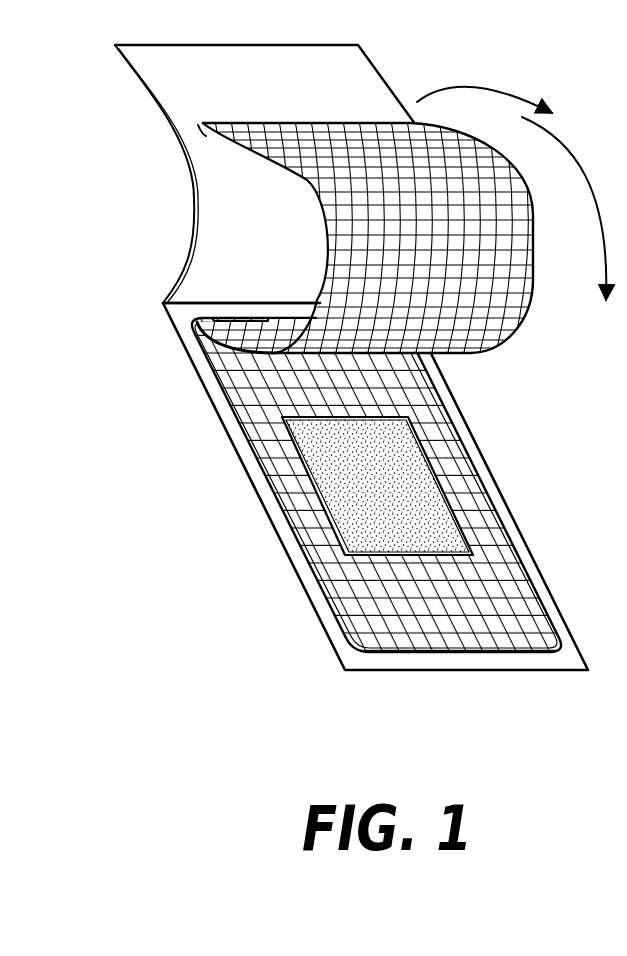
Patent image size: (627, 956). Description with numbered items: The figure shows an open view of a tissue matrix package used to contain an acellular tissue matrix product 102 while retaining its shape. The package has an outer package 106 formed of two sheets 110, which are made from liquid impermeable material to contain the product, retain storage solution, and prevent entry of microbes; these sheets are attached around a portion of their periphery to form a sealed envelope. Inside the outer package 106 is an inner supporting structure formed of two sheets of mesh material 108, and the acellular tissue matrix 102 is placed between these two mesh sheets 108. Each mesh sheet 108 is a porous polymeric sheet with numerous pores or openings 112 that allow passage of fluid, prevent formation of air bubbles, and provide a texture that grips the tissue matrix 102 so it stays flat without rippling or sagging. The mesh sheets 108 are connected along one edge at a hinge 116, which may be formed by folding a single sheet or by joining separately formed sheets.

The acellular tissue matrix product 102 is at (410, 461).
The outer package 106 is at (158, 414).
The mesh sheet 108 is at (513, 592).
The sheet 110 is at (272, 523).
The pores or openings 112 is at (372, 628).
The hinge 116 is at (246, 313).